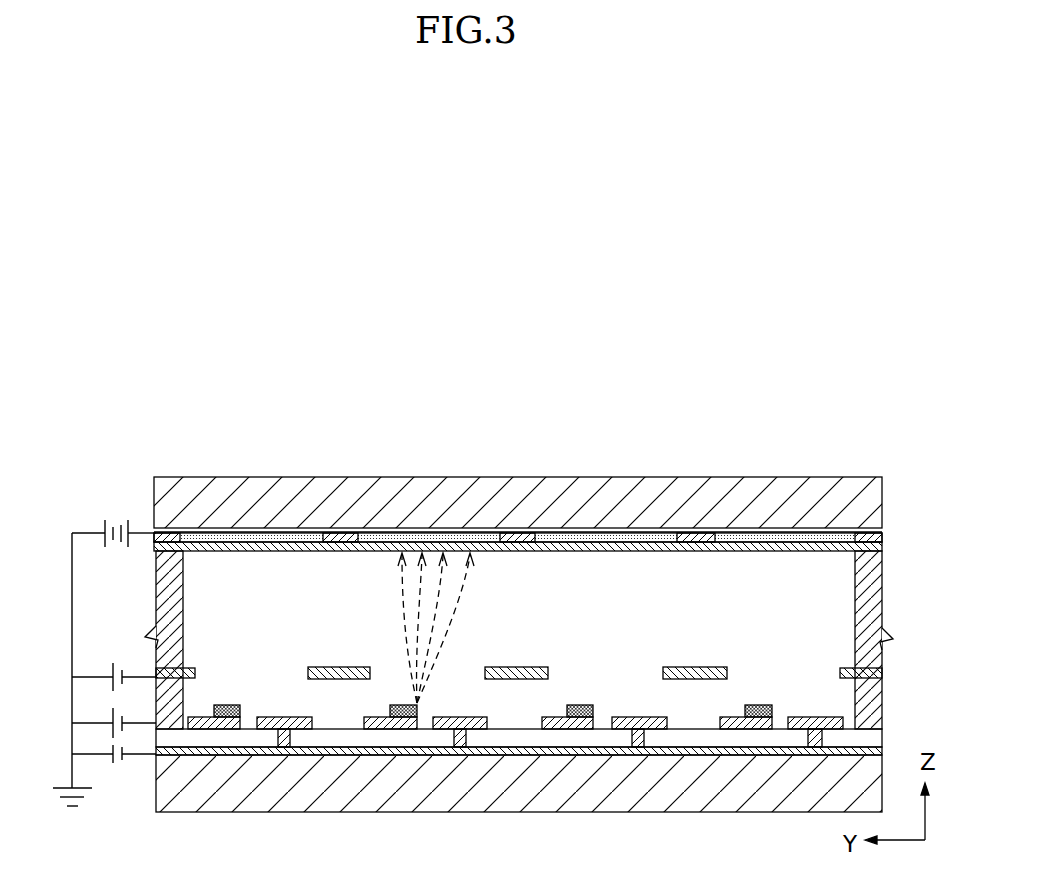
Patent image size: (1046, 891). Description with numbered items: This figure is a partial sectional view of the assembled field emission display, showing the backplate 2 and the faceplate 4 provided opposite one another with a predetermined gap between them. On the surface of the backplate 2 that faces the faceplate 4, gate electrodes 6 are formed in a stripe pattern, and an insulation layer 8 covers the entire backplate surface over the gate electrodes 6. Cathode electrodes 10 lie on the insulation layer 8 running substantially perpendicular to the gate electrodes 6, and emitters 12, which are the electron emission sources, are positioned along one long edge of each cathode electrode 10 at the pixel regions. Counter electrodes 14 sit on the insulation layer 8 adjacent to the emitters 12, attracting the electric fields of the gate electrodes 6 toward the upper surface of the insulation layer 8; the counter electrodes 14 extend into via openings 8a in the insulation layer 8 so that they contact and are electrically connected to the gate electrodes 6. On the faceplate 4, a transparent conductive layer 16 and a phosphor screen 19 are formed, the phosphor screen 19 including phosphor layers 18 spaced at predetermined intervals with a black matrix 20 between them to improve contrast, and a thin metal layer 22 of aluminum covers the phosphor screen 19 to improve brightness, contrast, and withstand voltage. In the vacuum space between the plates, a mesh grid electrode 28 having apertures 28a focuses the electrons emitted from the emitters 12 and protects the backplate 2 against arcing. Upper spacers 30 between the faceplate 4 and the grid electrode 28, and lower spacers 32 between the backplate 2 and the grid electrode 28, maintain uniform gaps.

The backplate 2 is at (425, 790).
The faceplate 4 is at (562, 480).
The gate electrodes 6 is at (462, 747).
The insulation layer 8 is at (878, 733).
The via openings 8a is at (813, 753).
The cathode electrodes 10 is at (222, 729).
The emitters 12 is at (228, 706).
The counter electrodes 14 is at (660, 728).
The transparent conductive layer 16 is at (662, 532).
The phosphor layers 18 is at (418, 533).
The phosphor screen 19 is at (518, 454).
The black matrix 20 is at (337, 533).
The metal layer 22 is at (873, 545).
The grid electrode 28 is at (528, 666).
The apertures 28a is at (372, 672).
The upper spacers 30 is at (875, 604).
The lower spacers 32 is at (855, 695).